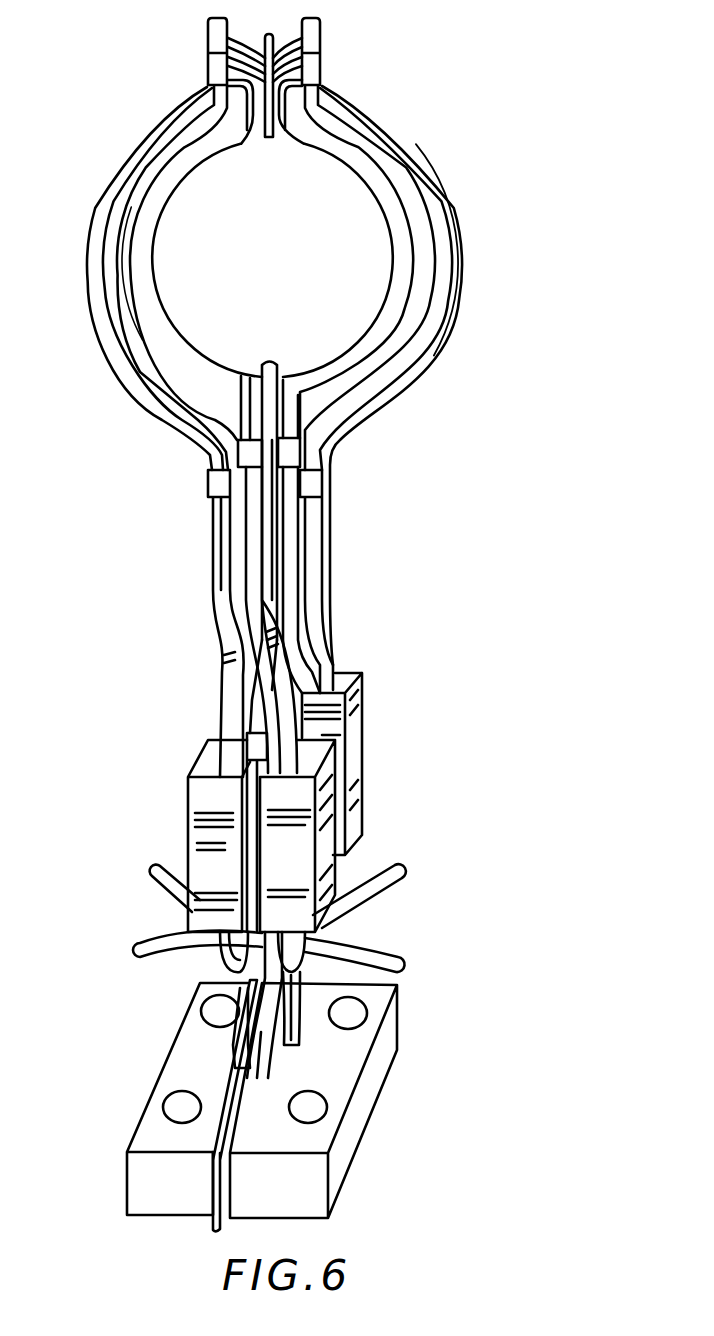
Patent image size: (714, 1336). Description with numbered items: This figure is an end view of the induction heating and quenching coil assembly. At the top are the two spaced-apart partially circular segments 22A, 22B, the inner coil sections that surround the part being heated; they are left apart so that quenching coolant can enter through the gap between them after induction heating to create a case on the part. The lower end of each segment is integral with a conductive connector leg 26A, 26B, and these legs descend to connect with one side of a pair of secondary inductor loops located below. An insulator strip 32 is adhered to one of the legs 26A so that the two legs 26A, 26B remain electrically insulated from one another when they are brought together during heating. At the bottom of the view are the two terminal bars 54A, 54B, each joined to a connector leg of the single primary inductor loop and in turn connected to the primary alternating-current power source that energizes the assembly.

The partially circular segment 22A is at (215, 362).
The partially circular segment 22B is at (313, 363).
The conductive connector leg 26A is at (254, 508).
The conductive connector leg 26B is at (286, 552).
The insulator strip 32 is at (262, 467).
The terminal bar 54A is at (138, 1177).
The terminal bar 54B is at (315, 1193).